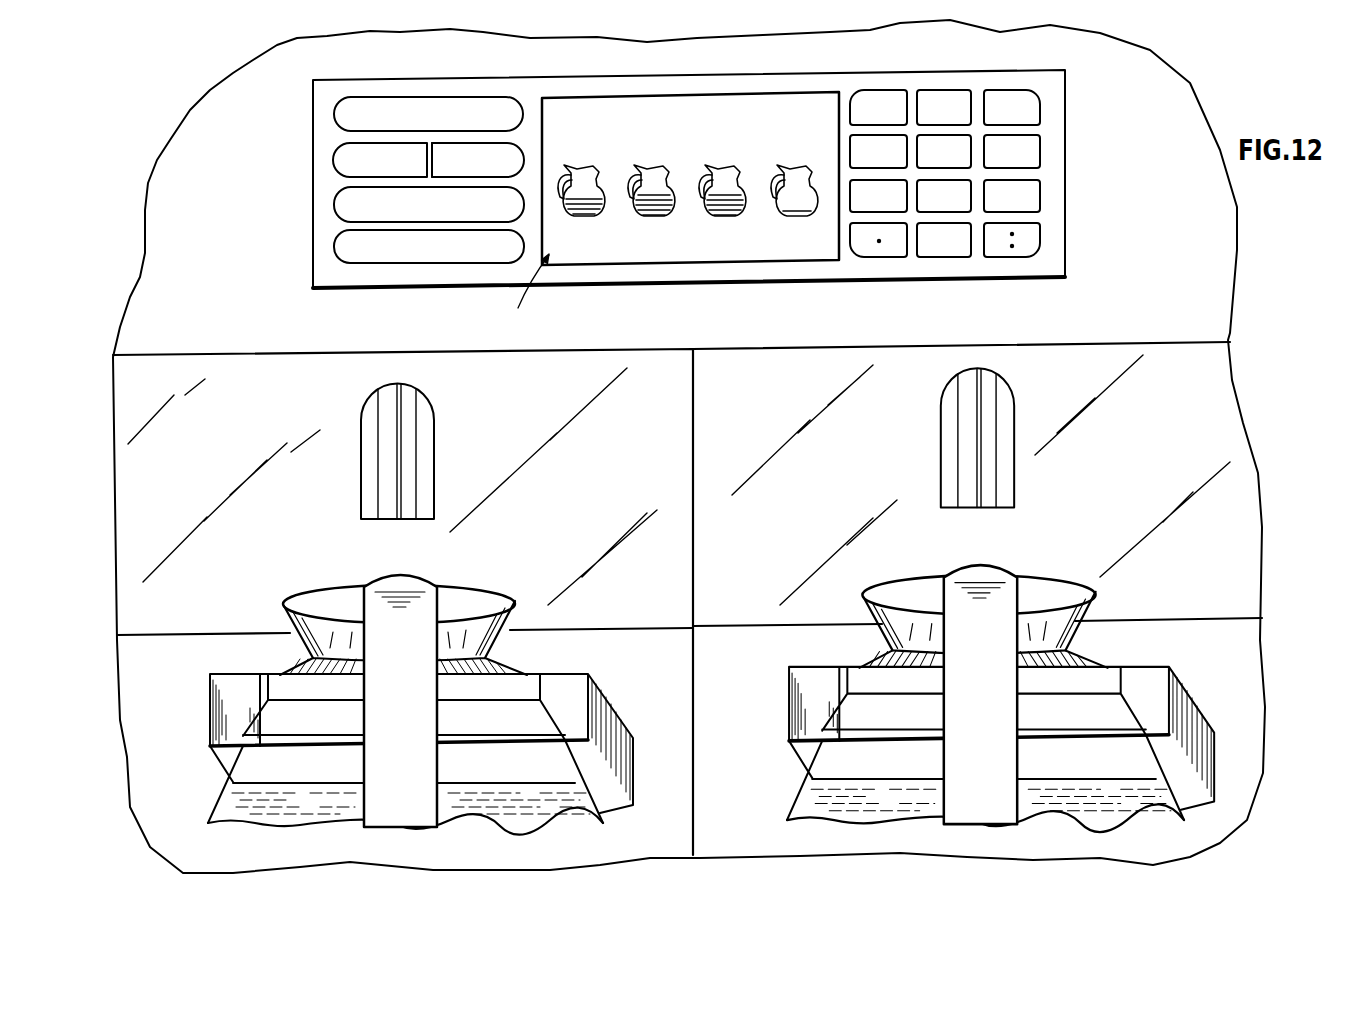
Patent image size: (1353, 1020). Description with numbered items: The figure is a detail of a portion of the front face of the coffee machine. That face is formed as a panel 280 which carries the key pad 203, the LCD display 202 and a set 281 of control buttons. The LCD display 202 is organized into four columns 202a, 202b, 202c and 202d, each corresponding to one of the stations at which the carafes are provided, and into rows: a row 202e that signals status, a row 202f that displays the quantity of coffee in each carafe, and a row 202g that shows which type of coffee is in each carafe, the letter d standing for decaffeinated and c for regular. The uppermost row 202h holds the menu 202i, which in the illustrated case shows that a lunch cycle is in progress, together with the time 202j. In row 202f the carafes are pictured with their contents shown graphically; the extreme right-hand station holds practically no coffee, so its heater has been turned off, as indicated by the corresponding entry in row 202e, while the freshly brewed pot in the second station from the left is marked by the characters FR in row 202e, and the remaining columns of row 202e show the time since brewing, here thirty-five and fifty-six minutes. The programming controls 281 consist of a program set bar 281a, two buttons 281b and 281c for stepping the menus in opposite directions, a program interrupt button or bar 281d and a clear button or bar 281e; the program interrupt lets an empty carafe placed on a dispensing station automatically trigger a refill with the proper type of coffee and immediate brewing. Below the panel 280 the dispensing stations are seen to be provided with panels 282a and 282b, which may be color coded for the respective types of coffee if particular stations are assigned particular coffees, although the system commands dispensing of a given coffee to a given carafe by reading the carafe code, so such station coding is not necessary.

The panel 280 is at (1065, 93).
The set of control buttons 281 is at (354, 87).
The program set bar 281a is at (340, 120).
The menu stepping button 281b is at (340, 158).
The menu stepping button 281c is at (513, 148).
The program interrupt button or bar 281d is at (345, 201).
The clear button or bar 281e is at (338, 250).
The LCD display 202 is at (578, 98).
The column 202a is at (598, 265).
The column 202b is at (665, 260).
The column 202c is at (730, 260).
The column 202d is at (800, 260).
The status row 202e is at (530, 295).
The quantity row 202f is at (560, 205).
The coffee type row 202g is at (813, 147).
The uppermost row 202h is at (743, 102).
The menu 202i is at (617, 110).
The time 202j is at (773, 102).
The key pad 203 is at (1040, 190).
The station panel 282a is at (162, 385).
The station panel 282b is at (1175, 355).